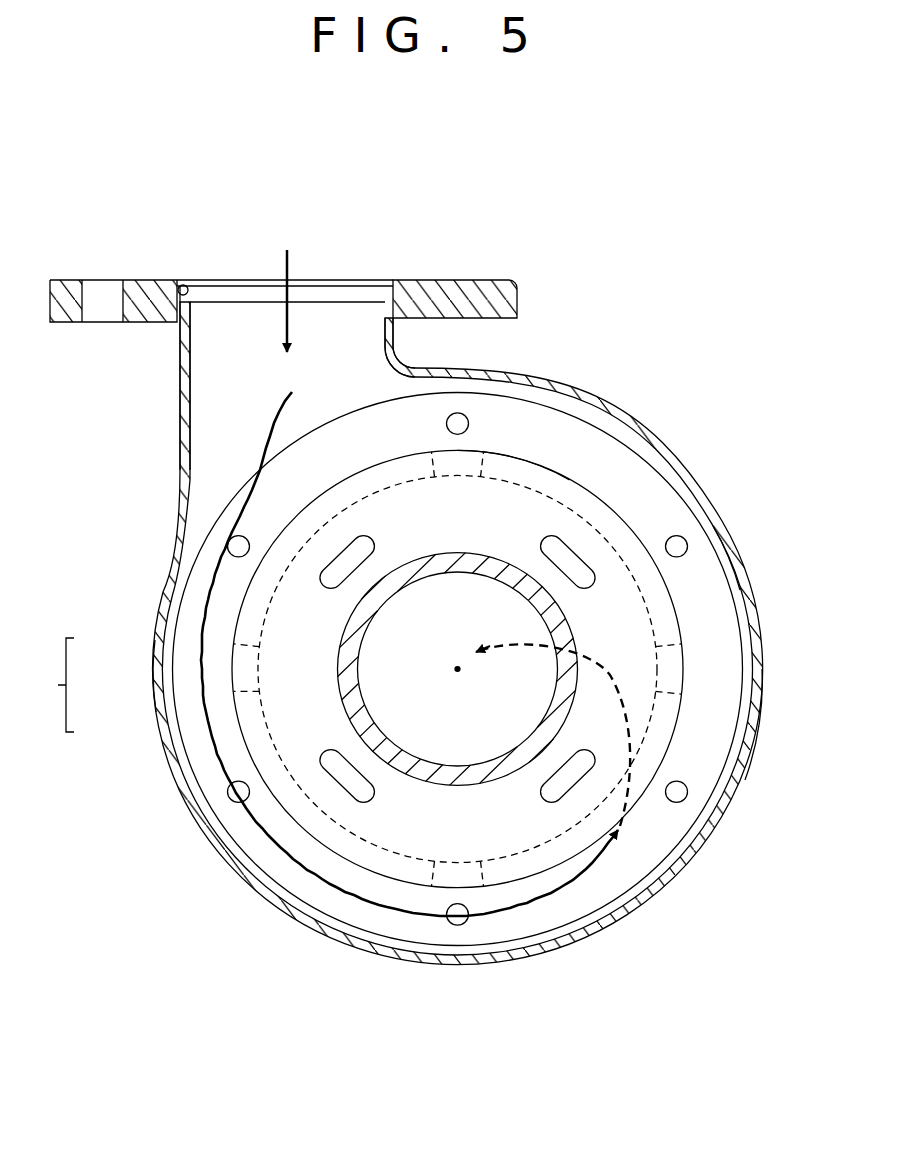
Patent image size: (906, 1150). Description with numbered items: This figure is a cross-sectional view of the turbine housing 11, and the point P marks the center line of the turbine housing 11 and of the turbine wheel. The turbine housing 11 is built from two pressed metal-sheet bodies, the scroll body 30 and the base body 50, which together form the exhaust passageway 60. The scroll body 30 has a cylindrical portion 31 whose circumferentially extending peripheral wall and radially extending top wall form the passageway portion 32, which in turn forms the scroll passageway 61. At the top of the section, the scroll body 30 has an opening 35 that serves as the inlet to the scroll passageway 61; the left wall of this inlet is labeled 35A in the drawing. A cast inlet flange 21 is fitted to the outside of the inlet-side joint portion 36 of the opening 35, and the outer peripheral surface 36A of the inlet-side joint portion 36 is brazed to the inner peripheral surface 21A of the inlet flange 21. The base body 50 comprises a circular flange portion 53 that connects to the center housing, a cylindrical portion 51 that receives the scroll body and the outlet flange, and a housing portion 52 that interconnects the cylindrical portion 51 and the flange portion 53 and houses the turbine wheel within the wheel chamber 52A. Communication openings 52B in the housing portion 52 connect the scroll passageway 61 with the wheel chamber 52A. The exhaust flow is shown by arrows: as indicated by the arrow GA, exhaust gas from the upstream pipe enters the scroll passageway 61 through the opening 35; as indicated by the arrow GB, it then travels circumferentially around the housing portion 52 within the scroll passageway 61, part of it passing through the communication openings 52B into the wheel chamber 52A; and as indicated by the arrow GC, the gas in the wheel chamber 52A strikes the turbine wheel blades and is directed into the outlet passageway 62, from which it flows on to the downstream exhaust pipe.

The turbine housing 11 is at (47, 685).
The inlet flange 21 is at (480, 280).
The inner peripheral surface of the inlet flange 21A is at (188, 286).
The scroll body 30 is at (153, 650).
The cylindrical portion 31 is at (573, 392).
The passageway portion 32 is at (760, 617).
The opening 35 is at (410, 362).
The inlet pipe side wall 35A is at (181, 393).
The inlet-side joint portion 36 is at (397, 328).
The outer peripheral surface of the inlet-side joint portion 36A is at (178, 312).
The base body 50 is at (153, 710).
The cylindrical portion of the base body 51 is at (458, 646).
The housing portion 52 is at (479, 669).
The wheel chamber 52A is at (457, 668).
The communication openings 52B is at (484, 654).
The flange portion 53 is at (707, 517).
The exhaust passageway 60 is at (662, 514).
The scroll passageway 61 is at (553, 470).
The outlet passageway 62 is at (458, 669).
The point P is at (431, 652).
The arrow GA is at (290, 287).
The arrow GB is at (409, 637).
The arrow GC is at (554, 735).